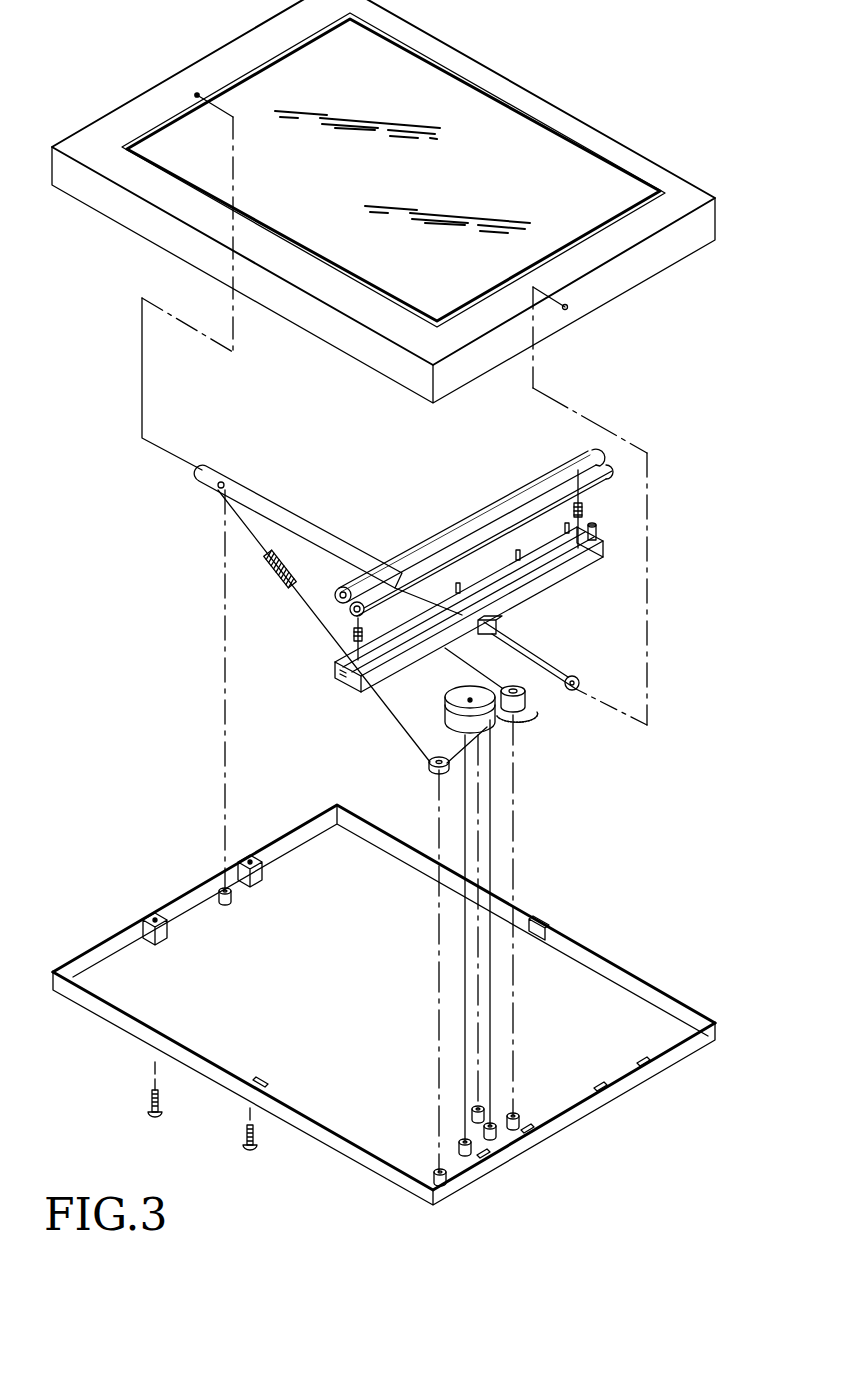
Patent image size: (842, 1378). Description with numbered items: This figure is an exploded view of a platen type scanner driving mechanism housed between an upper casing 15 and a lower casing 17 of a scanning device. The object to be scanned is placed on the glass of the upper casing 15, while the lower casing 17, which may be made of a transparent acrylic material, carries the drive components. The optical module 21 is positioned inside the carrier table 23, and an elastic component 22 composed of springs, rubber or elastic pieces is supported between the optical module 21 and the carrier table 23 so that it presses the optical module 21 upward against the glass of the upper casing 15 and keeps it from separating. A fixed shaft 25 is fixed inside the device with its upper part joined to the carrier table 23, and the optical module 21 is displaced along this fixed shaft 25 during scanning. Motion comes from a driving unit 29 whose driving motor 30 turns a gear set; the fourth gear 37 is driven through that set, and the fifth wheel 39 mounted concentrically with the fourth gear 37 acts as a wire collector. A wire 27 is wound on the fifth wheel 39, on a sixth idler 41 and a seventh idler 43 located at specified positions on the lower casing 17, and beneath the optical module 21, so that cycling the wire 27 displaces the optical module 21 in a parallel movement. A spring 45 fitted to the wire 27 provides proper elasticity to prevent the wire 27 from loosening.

The upper casing 15 is at (478, 115).
The lower casing 17 is at (597, 990).
The optical module 21 is at (585, 440).
The elastic component 22 is at (585, 503).
The carrier table 23 is at (575, 557).
The fixed shaft 25 is at (560, 663).
The wire 27 is at (312, 614).
The driving unit 29 is at (434, 699).
The driving motor 30 is at (480, 720).
The fourth gear 37 is at (537, 708).
The fifth wheel 39 is at (533, 718).
The sixth idler 41 is at (432, 770).
The seventh idler 43 is at (233, 472).
The spring 45 is at (277, 578).